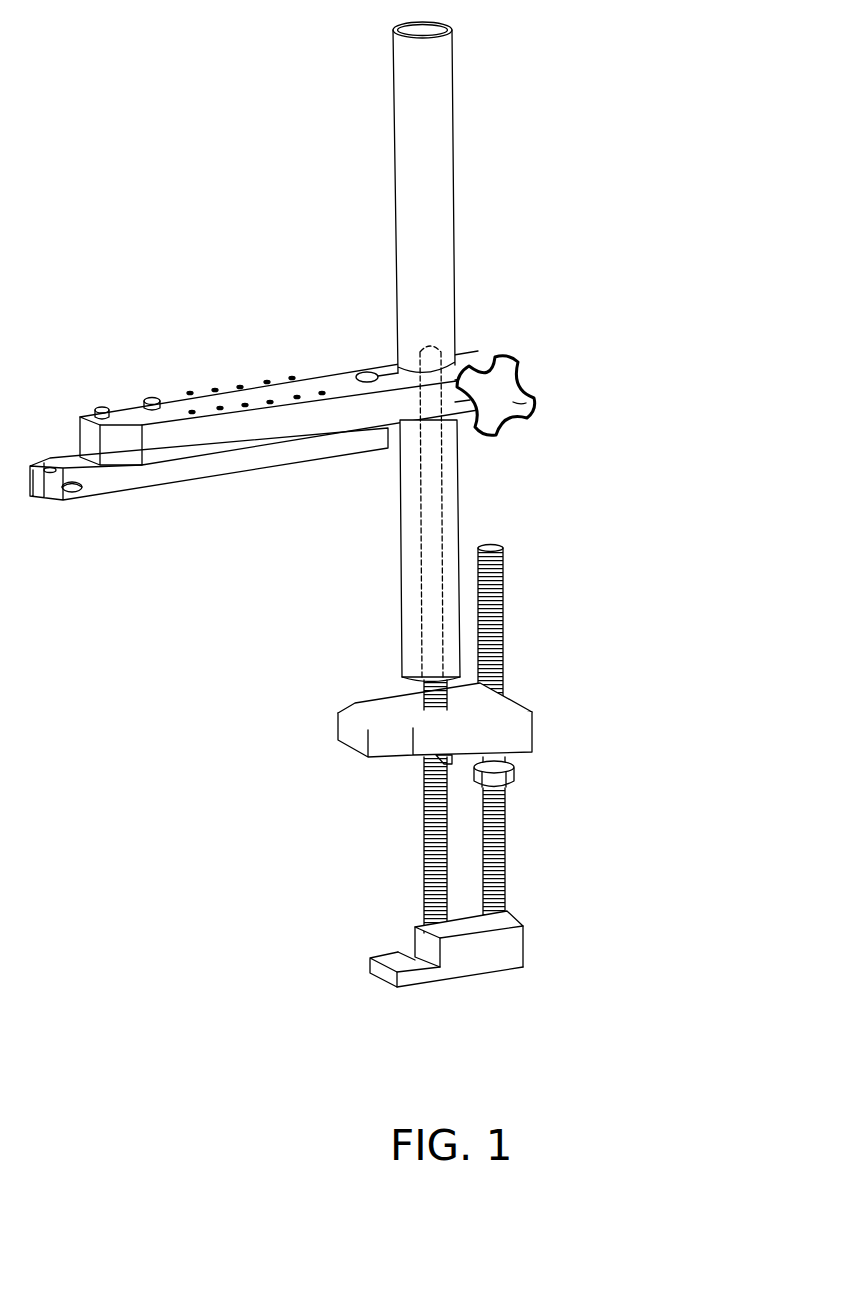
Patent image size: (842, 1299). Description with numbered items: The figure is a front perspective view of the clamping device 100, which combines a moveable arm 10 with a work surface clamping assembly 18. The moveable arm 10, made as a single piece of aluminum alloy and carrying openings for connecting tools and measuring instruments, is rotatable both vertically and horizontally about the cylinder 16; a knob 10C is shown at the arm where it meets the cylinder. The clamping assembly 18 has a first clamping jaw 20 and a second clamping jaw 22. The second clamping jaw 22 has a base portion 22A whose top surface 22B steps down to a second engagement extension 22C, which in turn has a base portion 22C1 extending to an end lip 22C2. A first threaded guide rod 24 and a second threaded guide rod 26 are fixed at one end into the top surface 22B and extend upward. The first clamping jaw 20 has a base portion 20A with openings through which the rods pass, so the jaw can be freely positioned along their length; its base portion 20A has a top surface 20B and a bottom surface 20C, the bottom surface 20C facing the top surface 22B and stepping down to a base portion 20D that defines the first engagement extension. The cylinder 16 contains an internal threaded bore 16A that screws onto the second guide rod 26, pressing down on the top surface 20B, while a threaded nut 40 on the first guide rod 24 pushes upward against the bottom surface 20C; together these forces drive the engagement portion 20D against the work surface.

The moveable arm 10 is at (178, 398).
The knob 10C is at (540, 410).
The cylinder 16 is at (442, 218).
The internal threaded bore 16A is at (445, 508).
The work surface clamping assembly 18 is at (652, 536).
The first clamping jaw 20 is at (436, 738).
The base portion 20A is at (435, 734).
The top surface 20B is at (387, 705).
The bottom surface 20C is at (460, 773).
The base portion 20D is at (378, 767).
The second clamping jaw 22 is at (436, 986).
The base portion 22A is at (473, 952).
The top surface 22B is at (468, 917).
The second engagement extension 22C is at (390, 988).
The base portion 22C1 is at (410, 957).
The end lip 22C2 is at (383, 958).
The first threaded guide rod 24 is at (505, 620).
The second threaded guide rod 26 is at (437, 836).
The threaded nut 40 is at (515, 779).
The clamping device 100 is at (648, 489).